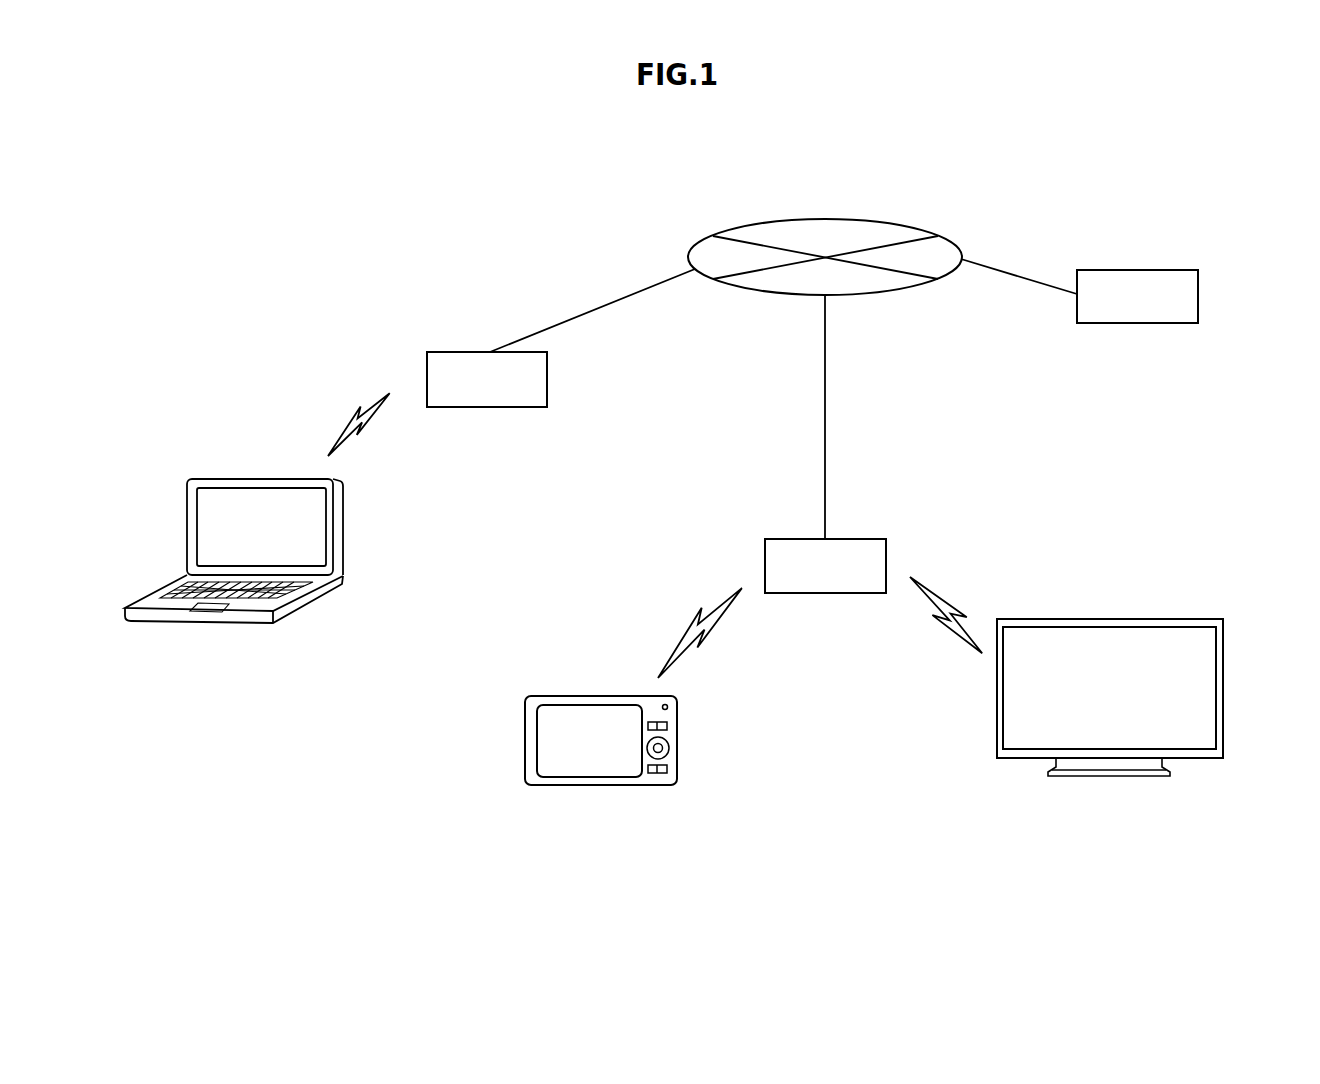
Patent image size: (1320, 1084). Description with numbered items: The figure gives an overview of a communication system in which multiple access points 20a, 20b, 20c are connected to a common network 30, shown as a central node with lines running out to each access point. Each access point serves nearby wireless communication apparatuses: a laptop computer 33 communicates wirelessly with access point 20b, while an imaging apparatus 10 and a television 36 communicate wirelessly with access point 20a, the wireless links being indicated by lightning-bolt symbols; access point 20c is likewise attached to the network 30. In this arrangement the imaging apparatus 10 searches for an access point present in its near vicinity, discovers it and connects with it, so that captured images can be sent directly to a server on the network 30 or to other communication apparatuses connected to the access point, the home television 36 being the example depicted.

The network 30 is at (877, 218).
The access point 20a is at (825, 594).
The access point 20b is at (487, 408).
The access point 20c is at (1137, 324).
The laptop computer 33 is at (212, 478).
The imaging apparatus 10 is at (547, 694).
The television 36 is at (1195, 617).